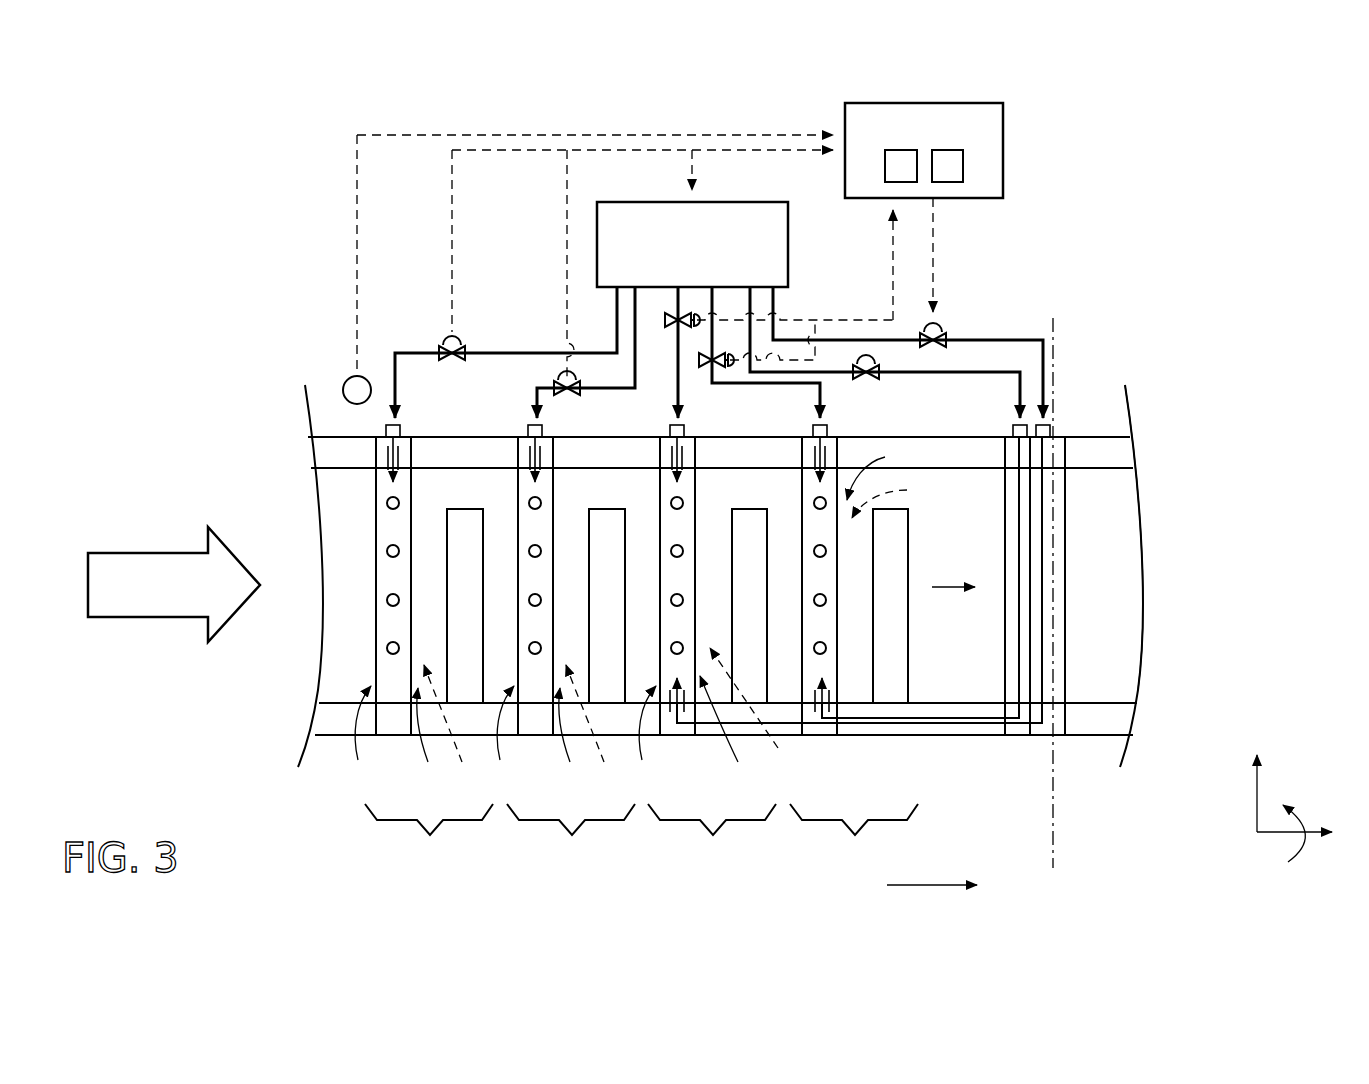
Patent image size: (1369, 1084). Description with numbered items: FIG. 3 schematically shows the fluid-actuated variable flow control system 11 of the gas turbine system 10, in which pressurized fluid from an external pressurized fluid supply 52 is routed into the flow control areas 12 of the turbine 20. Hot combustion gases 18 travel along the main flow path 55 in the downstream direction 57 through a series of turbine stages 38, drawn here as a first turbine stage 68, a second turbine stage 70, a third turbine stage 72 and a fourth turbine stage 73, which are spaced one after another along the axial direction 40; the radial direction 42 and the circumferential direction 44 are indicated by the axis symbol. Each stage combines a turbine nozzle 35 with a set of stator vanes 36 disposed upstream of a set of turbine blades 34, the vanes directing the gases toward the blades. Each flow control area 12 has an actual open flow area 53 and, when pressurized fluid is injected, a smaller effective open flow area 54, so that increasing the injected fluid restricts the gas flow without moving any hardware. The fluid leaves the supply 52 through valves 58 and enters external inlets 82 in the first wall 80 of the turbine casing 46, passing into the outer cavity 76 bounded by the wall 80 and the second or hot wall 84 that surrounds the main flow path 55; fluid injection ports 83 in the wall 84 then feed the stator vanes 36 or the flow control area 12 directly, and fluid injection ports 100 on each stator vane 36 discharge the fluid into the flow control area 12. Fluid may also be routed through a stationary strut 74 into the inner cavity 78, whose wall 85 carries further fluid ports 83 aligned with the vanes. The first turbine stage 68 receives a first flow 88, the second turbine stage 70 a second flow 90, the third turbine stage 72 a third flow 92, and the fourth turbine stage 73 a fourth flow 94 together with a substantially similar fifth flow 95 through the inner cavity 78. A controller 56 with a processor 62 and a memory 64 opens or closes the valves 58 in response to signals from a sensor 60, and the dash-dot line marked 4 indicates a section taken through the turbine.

The section line 4- 4 is at (1053, 318).
The gas turbine system 10 is at (1047, 239).
The fluid-actuated variable flow control system 11 is at (1070, 277).
The fluid-actuated variable flow control area 12 is at (647, 347).
The hot combustion gases 18 is at (148, 553).
The turbine 20 is at (310, 157).
The turbine blades 34 is at (677, 606).
The turbine nozzle 35 is at (503, 735).
The stator vanes 36 is at (376, 485).
The turbine stages 38 is at (505, 880).
The axial direction 40 is at (1275, 833).
The radial direction 42 is at (1255, 793).
The circumferential direction 44 is at (1300, 812).
The turbine casing 46 is at (1122, 438).
The external pressurized fluid supply 52 is at (655, 202).
The actual open flow area 53 is at (662, 616).
The effective open flow area 54 is at (682, 632).
The main flow path 55 is at (945, 589).
The controller 56 is at (1005, 152).
The downstream direction 57 is at (930, 886).
The valve 58 is at (463, 343).
The sensor 60 is at (343, 382).
The processor 62 is at (885, 166).
The memory 64 is at (1003, 182).
The first turbine stage 68 is at (429, 837).
The second turbine stage 70 is at (571, 837).
The third turbine stage 72 is at (712, 837).
The fourth turbine stage 73 is at (854, 837).
The stationary strut 74 is at (1003, 528).
The outer cavity 76 is at (928, 437).
The inner cavity 78 is at (930, 714).
The first wall 80 is at (430, 420).
The external inlets 82 is at (386, 430).
The fluid injection ports 83 is at (384, 464).
The second wall 84 is at (928, 467).
The wall of the inner cavity 85 is at (962, 710).
The first flow 88 is at (413, 352).
The second flow 90 is at (537, 390).
The third flow 92 is at (677, 383).
The fourth flow 94 is at (820, 380).
The fifth flow 95 is at (965, 372).
The fluid injection ports 100 is at (386, 504).